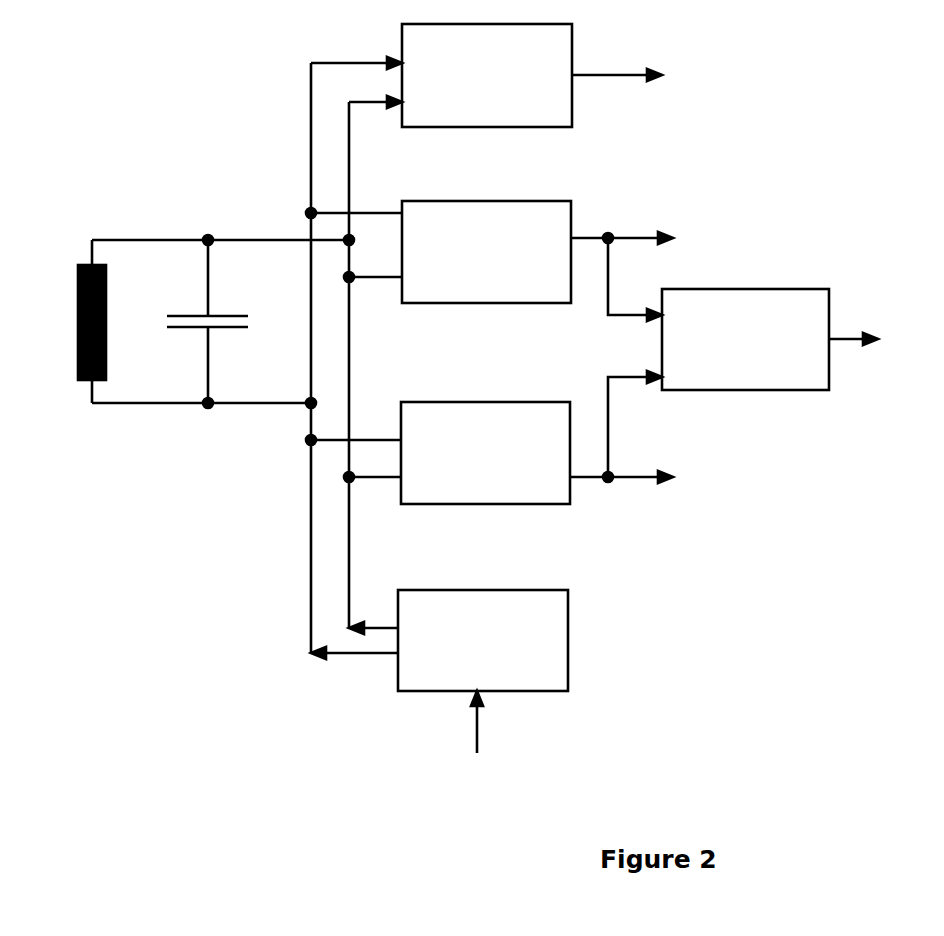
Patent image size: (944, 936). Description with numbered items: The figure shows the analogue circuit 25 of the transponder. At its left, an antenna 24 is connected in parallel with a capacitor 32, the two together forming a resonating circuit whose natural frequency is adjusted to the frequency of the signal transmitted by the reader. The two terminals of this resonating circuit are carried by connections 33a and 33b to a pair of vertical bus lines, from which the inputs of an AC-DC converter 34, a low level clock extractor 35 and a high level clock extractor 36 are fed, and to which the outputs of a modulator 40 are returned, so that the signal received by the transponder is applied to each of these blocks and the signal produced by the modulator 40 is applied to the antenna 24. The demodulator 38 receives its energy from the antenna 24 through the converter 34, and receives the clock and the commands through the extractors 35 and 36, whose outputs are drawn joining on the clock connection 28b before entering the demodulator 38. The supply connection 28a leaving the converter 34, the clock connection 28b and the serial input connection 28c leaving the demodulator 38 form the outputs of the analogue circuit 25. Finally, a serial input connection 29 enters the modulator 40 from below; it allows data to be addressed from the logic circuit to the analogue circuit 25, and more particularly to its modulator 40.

The antenna 24 is at (80, 275).
The analogue circuit 25 is at (725, 179).
The supply connection 28a is at (625, 77).
The clock connection 28b is at (595, 240).
The serial input connection 28c is at (853, 340).
The serial input connection 29 is at (477, 727).
The capacitor 32 is at (197, 315).
The connection 33a is at (254, 242).
The connection 33b is at (246, 403).
The AC-DC converter 34 is at (557, 62).
The low level clock extractor 35 is at (557, 224).
The high level clock extractor 36 is at (555, 488).
The demodulator 38 is at (763, 302).
The modulator 40 is at (553, 665).